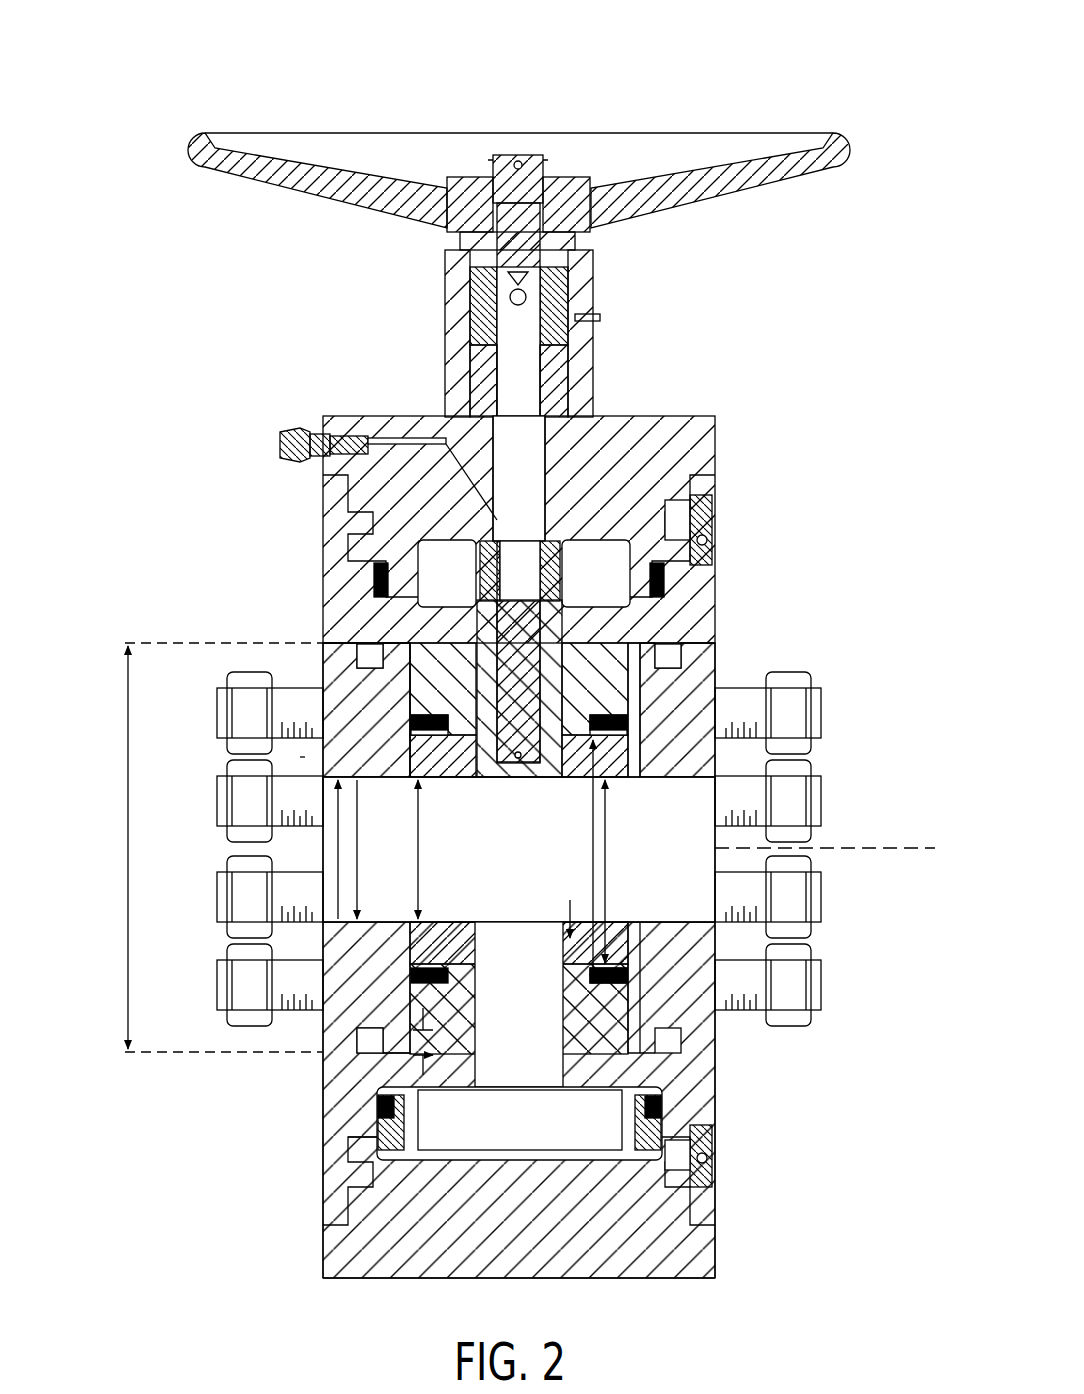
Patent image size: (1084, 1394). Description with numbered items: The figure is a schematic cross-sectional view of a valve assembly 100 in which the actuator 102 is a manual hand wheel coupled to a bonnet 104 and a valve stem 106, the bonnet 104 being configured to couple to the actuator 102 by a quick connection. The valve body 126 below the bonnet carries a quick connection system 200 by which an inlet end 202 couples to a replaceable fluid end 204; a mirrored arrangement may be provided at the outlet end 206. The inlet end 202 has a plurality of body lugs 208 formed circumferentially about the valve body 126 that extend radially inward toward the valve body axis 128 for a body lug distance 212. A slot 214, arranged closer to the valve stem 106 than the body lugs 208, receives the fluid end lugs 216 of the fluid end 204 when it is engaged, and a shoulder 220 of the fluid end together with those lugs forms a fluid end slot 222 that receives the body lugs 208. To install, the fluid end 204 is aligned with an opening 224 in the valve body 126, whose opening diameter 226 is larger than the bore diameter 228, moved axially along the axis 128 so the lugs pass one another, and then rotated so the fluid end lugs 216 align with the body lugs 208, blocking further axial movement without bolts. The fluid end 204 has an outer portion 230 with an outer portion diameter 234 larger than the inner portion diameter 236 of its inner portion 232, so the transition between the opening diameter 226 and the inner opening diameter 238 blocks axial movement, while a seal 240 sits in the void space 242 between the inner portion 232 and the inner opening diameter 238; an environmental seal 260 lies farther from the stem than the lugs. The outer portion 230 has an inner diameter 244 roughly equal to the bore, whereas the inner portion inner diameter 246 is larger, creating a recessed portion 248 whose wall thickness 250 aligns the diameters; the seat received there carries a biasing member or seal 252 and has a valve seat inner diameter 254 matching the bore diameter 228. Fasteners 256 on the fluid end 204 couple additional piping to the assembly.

The valve assembly 100 is at (803, 42).
The actuator 102 is at (190, 142).
The bonnet 104 is at (700, 440).
The valve stem 106 is at (530, 498).
The valve body 126 is at (692, 603).
The valve body axis 128 is at (868, 846).
The quick connection system 200 is at (280, 548).
The inlet end 202 is at (228, 1152).
The replaceable fluid end 204 is at (270, 635).
The outlet end 206 is at (856, 1024).
The body lugs 208 is at (372, 1140).
The body lug distance 212 is at (428, 1063).
The slot 214 is at (428, 646).
The fluid end lugs 216 is at (395, 640).
The shoulder 220 is at (375, 1056).
The fluid end slot 222 is at (350, 1020).
The opening 224 is at (303, 757).
The opening diameter 226 is at (128, 885).
The bore diameter 228 is at (335, 880).
The outer portion 230 is at (788, 600).
The inner portion 232 is at (590, 1050).
The outer portion diameter 234 is at (645, 885).
The inner portion diameter 236 is at (590, 826).
The inner opening diameter 238 is at (470, 873).
The seal 240 is at (425, 730).
The void space 242 is at (413, 720).
The inner diameter 244 is at (358, 886).
The inner portion inner diameter 246 is at (600, 990).
The recessed portion 248 is at (603, 648).
The wall thickness 250 is at (568, 945).
The biasing member and/or seal 252 is at (622, 738).
The valve seat inner diameter 254 is at (420, 886).
The fasteners 256 is at (822, 978).
The environmental seal 260 is at (640, 652).